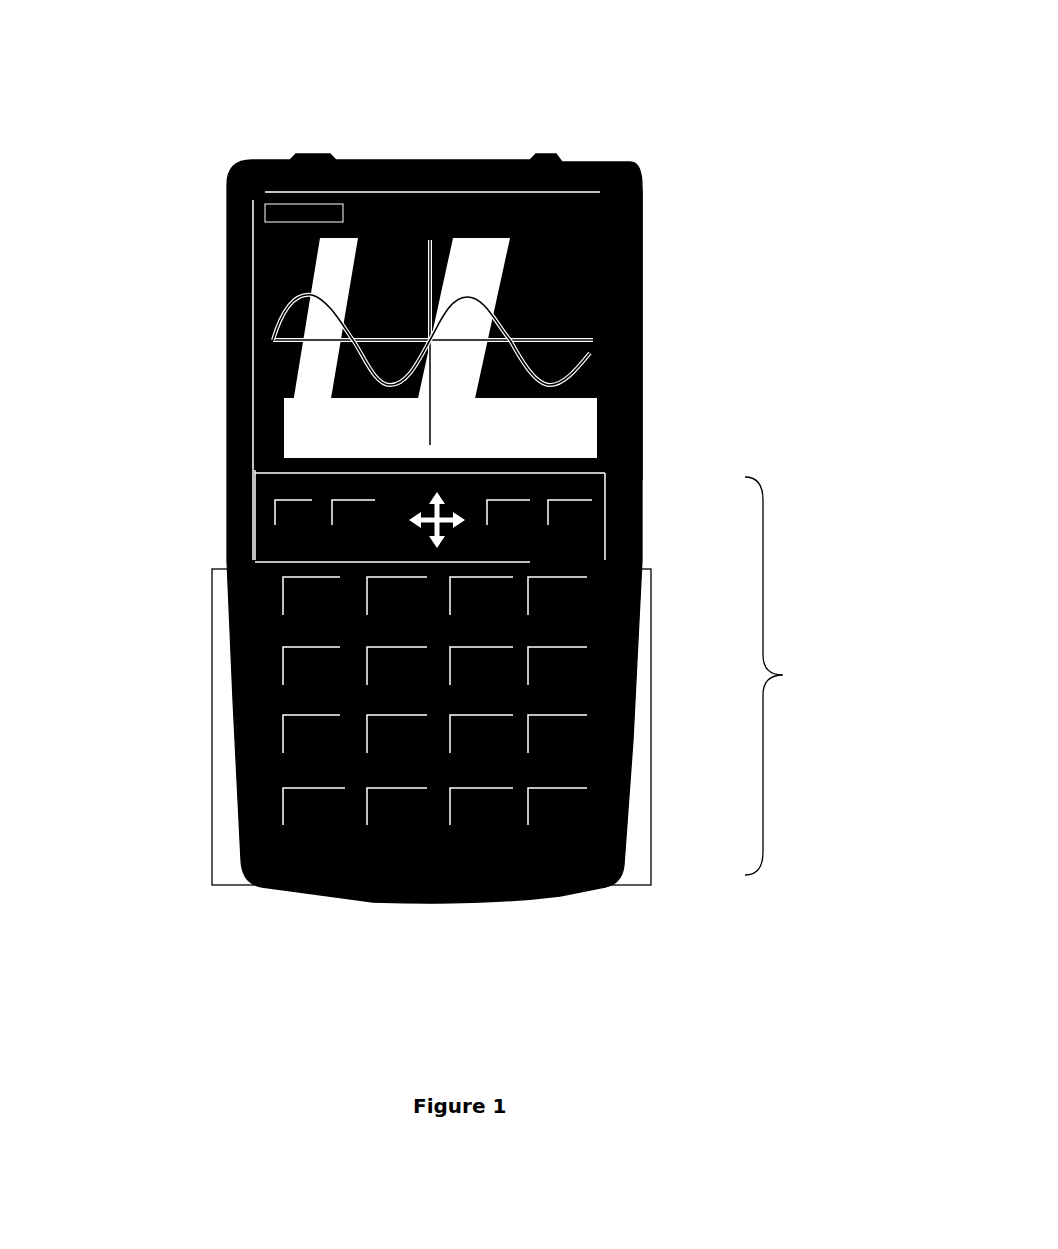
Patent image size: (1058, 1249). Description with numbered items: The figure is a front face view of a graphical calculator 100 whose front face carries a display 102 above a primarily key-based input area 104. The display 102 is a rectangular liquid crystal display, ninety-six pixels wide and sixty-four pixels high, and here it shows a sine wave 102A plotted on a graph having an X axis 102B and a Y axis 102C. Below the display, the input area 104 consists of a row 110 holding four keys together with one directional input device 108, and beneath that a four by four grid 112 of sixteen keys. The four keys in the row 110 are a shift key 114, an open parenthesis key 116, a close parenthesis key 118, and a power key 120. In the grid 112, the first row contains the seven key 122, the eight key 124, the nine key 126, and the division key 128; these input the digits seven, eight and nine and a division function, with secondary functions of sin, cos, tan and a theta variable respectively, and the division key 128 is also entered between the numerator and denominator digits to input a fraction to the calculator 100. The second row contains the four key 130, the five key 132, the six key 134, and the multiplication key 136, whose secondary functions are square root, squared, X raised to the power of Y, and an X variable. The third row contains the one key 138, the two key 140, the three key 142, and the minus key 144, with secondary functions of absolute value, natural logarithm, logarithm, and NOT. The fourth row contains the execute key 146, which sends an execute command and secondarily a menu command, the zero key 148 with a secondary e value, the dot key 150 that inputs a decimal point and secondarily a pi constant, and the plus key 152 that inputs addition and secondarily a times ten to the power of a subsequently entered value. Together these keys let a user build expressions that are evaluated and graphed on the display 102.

The graphical calculator 100 is at (668, 128).
The display 102 is at (358, 246).
The sine wave 102A is at (397, 342).
The X axis 102B is at (330, 158).
The Y axis 102C is at (430, 340).
The input area 104 is at (787, 676).
The directional input device 108 is at (453, 490).
The row 110 is at (254, 505).
The four by four grid 112 is at (211, 885).
The shift key 114 is at (290, 503).
The open parenthesis key 116 is at (350, 503).
The close parenthesis key 118 is at (505, 503).
The power key 120 is at (575, 500).
The seven key 122 is at (227, 588).
The eight key 124 is at (227, 553).
The nine key 126 is at (642, 540).
The division key 128 is at (642, 588).
The four key 130 is at (230, 667).
The five key 132 is at (227, 617).
The six key 134 is at (640, 615).
The multiplication key 136 is at (640, 645).
The one key 138 is at (235, 735).
The two key 140 is at (232, 690).
The three key 142 is at (638, 677).
The minus key 144 is at (635, 703).
The execute key 146 is at (238, 827).
The zero key 148 is at (373, 902).
The dot key 150 is at (480, 902).
The plus key 152 is at (560, 895).